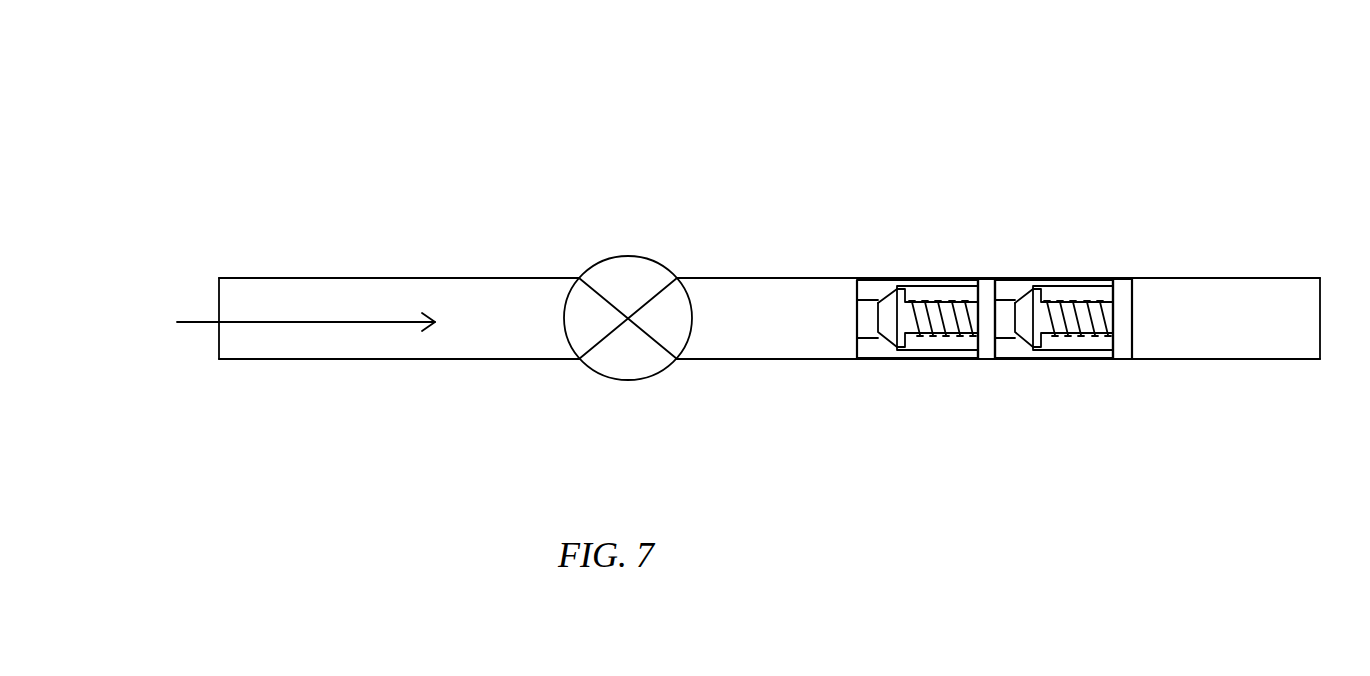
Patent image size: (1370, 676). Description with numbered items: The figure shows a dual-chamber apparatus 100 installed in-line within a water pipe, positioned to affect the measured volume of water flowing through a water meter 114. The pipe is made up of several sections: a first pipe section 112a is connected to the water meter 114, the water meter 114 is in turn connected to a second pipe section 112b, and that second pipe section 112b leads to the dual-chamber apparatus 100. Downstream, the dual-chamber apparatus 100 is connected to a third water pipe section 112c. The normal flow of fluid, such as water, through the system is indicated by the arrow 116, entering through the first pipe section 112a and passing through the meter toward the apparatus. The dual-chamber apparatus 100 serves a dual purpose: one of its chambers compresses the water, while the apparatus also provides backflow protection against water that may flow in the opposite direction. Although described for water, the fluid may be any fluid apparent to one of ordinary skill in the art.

The dual-chamber apparatus 100 is at (873, 277).
The first pipe section 112a is at (427, 298).
The second pipe section 112b is at (775, 300).
The third water pipe section 112c is at (1177, 283).
The water meter 114 is at (582, 287).
The arrow 116 is at (207, 322).